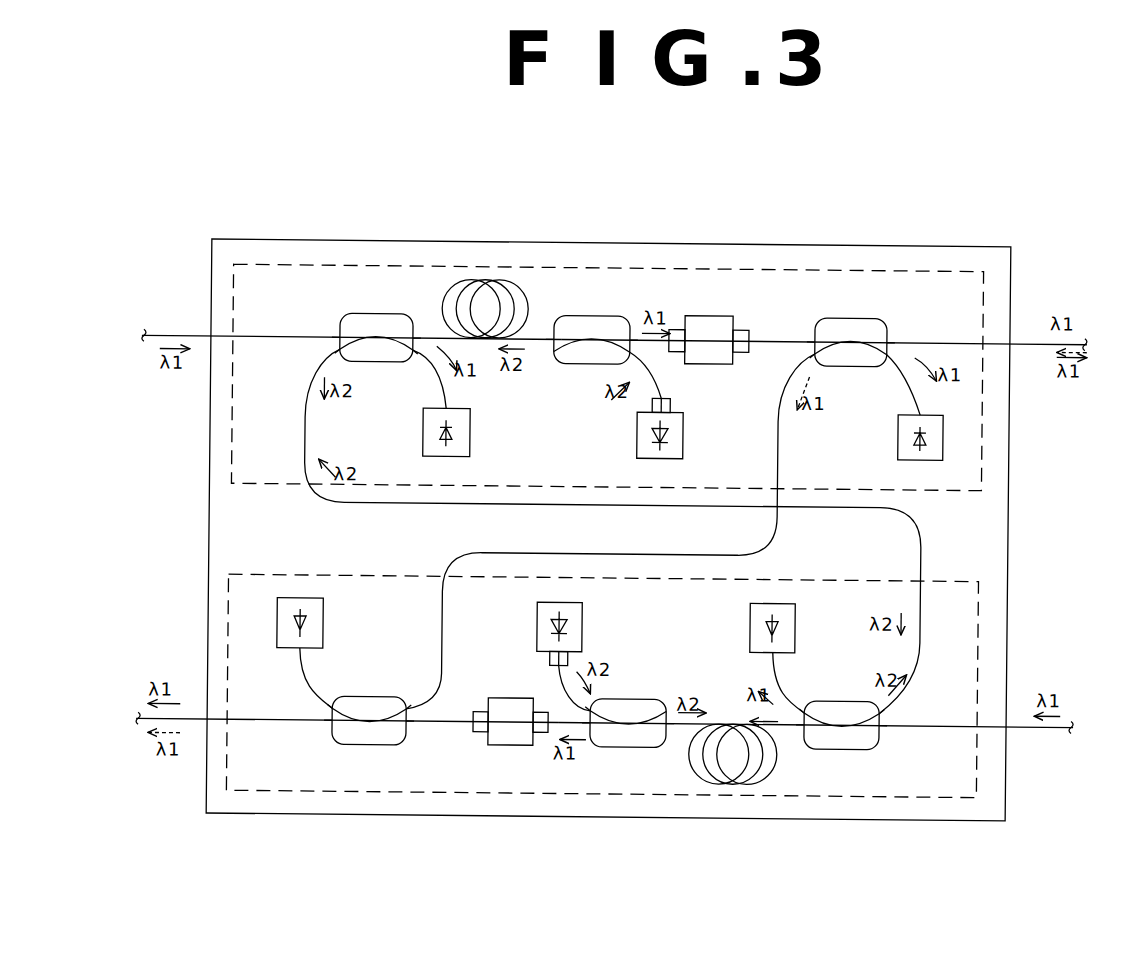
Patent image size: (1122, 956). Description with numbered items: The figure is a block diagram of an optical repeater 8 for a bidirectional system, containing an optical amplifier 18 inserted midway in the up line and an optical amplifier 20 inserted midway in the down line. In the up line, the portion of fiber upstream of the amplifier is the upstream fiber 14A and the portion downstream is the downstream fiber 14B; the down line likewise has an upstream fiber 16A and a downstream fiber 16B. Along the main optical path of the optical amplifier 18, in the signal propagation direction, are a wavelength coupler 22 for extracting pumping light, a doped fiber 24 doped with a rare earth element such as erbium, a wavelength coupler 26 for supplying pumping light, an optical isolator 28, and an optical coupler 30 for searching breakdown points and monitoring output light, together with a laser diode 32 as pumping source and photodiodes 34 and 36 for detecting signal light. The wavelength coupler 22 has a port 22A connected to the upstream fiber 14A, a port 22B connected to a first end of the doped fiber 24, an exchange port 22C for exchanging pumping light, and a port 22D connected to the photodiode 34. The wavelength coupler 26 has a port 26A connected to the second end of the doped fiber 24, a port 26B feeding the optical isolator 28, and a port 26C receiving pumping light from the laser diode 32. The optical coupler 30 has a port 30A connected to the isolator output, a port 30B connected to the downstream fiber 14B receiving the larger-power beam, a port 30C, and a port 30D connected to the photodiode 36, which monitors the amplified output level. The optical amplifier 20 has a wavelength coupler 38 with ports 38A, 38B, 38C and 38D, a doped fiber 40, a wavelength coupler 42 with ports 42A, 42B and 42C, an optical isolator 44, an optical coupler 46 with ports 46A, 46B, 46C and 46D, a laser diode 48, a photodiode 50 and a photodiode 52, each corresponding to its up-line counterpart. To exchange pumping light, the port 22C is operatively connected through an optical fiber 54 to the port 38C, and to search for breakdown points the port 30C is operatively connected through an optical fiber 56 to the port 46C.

The optical repeater 8 is at (905, 243).
The upstream fiber 14A is at (183, 338).
The downstream fiber 14B is at (1036, 338).
The upstream fiber 16A is at (1024, 725).
The downstream fiber 16B is at (198, 724).
The optical amplifier 18 is at (293, 268).
The optical amplifier 20 is at (318, 796).
The wavelength coupler 22 is at (366, 316).
The port 22A is at (338, 338).
The port 22B is at (416, 333).
The exchange port 22C is at (345, 357).
The port 22D is at (414, 369).
The doped fiber 24 is at (484, 281).
The wavelength coupler 26 is at (596, 316).
The port 26A is at (551, 338).
The port 26B is at (630, 336).
The port 26C is at (633, 356).
The optical isolator 28 is at (714, 315).
The optical coupler 30 is at (849, 316).
The port 30A is at (812, 338).
The port 30B is at (888, 335).
The port 30C is at (820, 357).
The port 30D is at (890, 384).
The laser diode 32 is at (636, 436).
The photodiode 34 is at (469, 435).
The photodiode 36 is at (897, 454).
The wavelength coupler 38 is at (858, 747).
The port 38A is at (884, 724).
The port 38B is at (806, 735).
The port 38C is at (881, 711).
The port 38D is at (806, 711).
The doped fiber 40 is at (760, 784).
The wavelength coupler 42 is at (643, 747).
The port 42A is at (668, 735).
The port 42B is at (592, 737).
The port 42C is at (594, 711).
The optical isolator 44 is at (497, 746).
The optical coupler 46 is at (370, 747).
The port 46A is at (408, 724).
The port 46B is at (334, 730).
The port 46C is at (408, 711).
The port 46D is at (334, 711).
The laser diode 48 is at (576, 603).
The photodiode 50 is at (788, 602).
The photodiode 52 is at (300, 601).
The optical fiber 54 is at (342, 506).
The optical fiber 56 is at (525, 554).